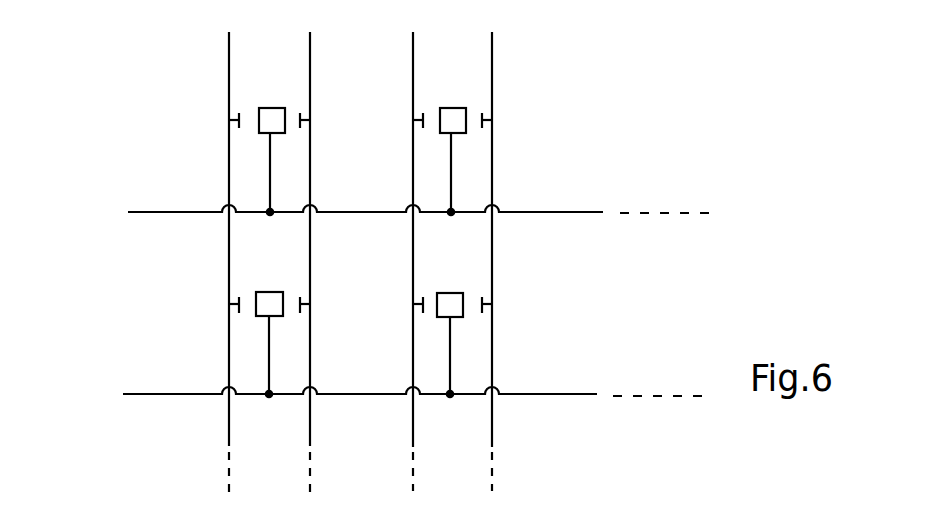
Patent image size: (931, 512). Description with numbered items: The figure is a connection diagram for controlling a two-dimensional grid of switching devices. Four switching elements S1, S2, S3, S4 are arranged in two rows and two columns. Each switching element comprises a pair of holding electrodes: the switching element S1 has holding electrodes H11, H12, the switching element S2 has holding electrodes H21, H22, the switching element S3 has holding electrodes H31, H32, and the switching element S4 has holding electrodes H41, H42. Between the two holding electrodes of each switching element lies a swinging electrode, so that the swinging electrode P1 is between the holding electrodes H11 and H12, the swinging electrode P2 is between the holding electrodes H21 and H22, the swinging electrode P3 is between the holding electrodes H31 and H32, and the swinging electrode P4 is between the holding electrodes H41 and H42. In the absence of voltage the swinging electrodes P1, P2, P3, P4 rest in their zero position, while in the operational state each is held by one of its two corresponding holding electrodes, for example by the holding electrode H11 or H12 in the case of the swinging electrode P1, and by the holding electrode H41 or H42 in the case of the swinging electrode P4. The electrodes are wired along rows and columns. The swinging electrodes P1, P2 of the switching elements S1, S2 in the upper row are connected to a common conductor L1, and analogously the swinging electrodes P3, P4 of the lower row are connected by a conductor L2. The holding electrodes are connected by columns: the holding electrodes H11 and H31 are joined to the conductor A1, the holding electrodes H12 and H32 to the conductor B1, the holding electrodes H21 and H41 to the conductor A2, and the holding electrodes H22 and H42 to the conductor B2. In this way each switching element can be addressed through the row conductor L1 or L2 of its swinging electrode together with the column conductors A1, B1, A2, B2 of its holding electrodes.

The conductor A1 is at (234, 248).
The conductor B1 is at (314, 250).
The conductor A2 is at (419, 248).
The conductor B2 is at (495, 247).
The common conductor L1 is at (405, 211).
The conductor L2 is at (402, 394).
The switching element S1 is at (274, 115).
The switching element S2 is at (455, 115).
The switching element S3 is at (270, 295).
The switching element S4 is at (451, 296).
The swinging electrode P1 is at (272, 206).
The swinging electrode P2 is at (453, 206).
The swinging electrode P3 is at (271, 389).
The swinging electrode P4 is at (452, 390).
The holding electrode H11 is at (243, 139).
The holding electrode H12 is at (294, 139).
The holding electrode H21 is at (427, 138).
The holding electrode H22 is at (477, 138).
The holding electrode H31 is at (244, 322).
The holding electrode H32 is at (292, 322).
The holding electrode H41 is at (427, 322).
The holding electrode H42 is at (477, 322).